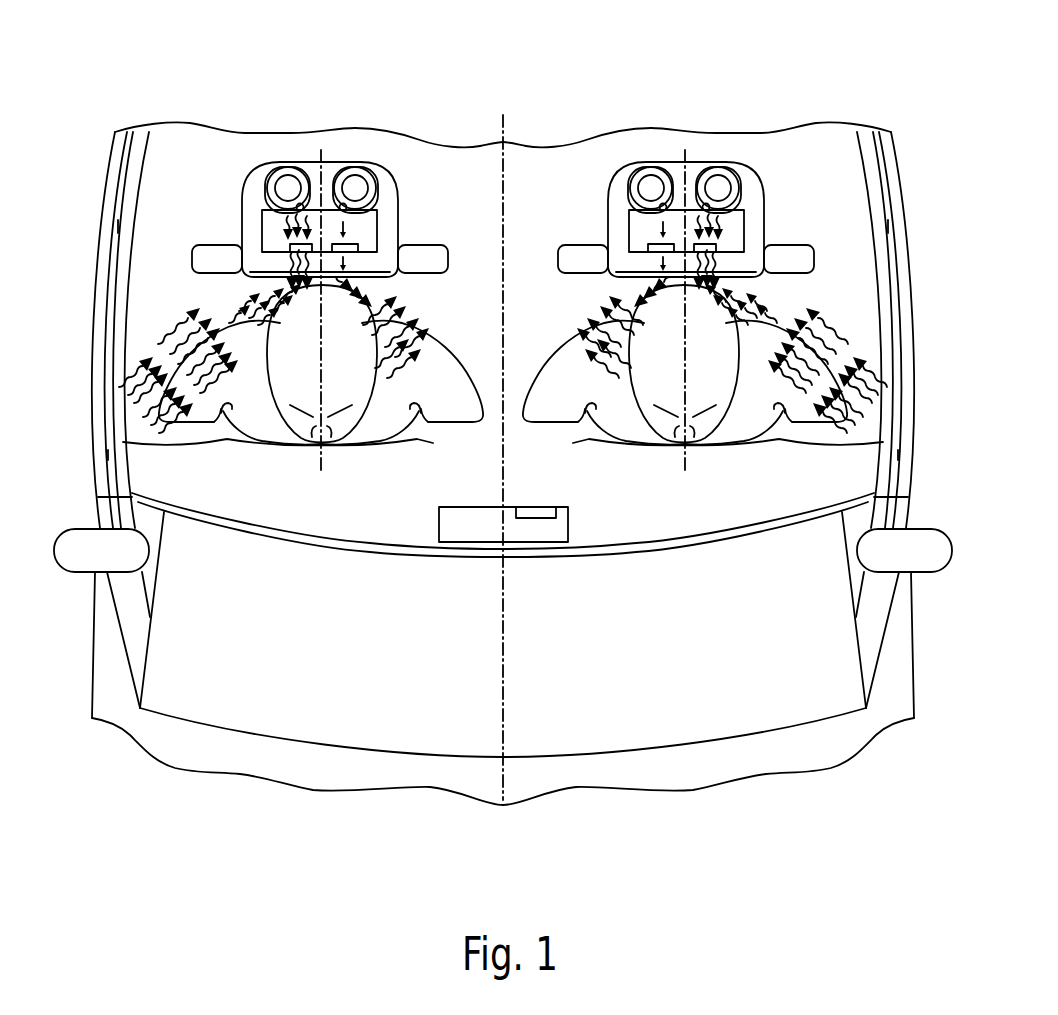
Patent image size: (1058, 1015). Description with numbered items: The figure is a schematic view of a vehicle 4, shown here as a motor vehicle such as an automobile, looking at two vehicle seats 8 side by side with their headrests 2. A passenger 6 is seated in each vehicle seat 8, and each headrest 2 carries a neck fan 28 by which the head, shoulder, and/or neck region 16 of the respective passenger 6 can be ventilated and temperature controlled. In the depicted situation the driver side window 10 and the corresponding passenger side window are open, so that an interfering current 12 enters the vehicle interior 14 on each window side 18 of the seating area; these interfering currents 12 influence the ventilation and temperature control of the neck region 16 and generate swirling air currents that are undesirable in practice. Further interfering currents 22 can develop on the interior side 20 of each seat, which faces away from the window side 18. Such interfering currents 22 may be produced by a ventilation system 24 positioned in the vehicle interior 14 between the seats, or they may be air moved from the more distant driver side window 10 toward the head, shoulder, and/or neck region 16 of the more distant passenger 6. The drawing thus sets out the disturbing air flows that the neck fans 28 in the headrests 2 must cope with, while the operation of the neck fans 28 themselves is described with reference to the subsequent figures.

The headrest 2 is at (763, 237).
The vehicle 4 is at (906, 134).
The passenger 6 is at (880, 443).
The vehicle seat 8 is at (588, 256).
The driver side window 10 is at (889, 245).
The interfering current 12 is at (846, 363).
The vehicle interior 14 is at (823, 465).
The head, shoulder, and/or neck region 16 is at (785, 294).
The window side 18 is at (737, 155).
The interior side 20 is at (643, 155).
The interfering current 22 is at (603, 365).
The ventilation system 24 is at (524, 532).
The neck fan 28 is at (748, 193).